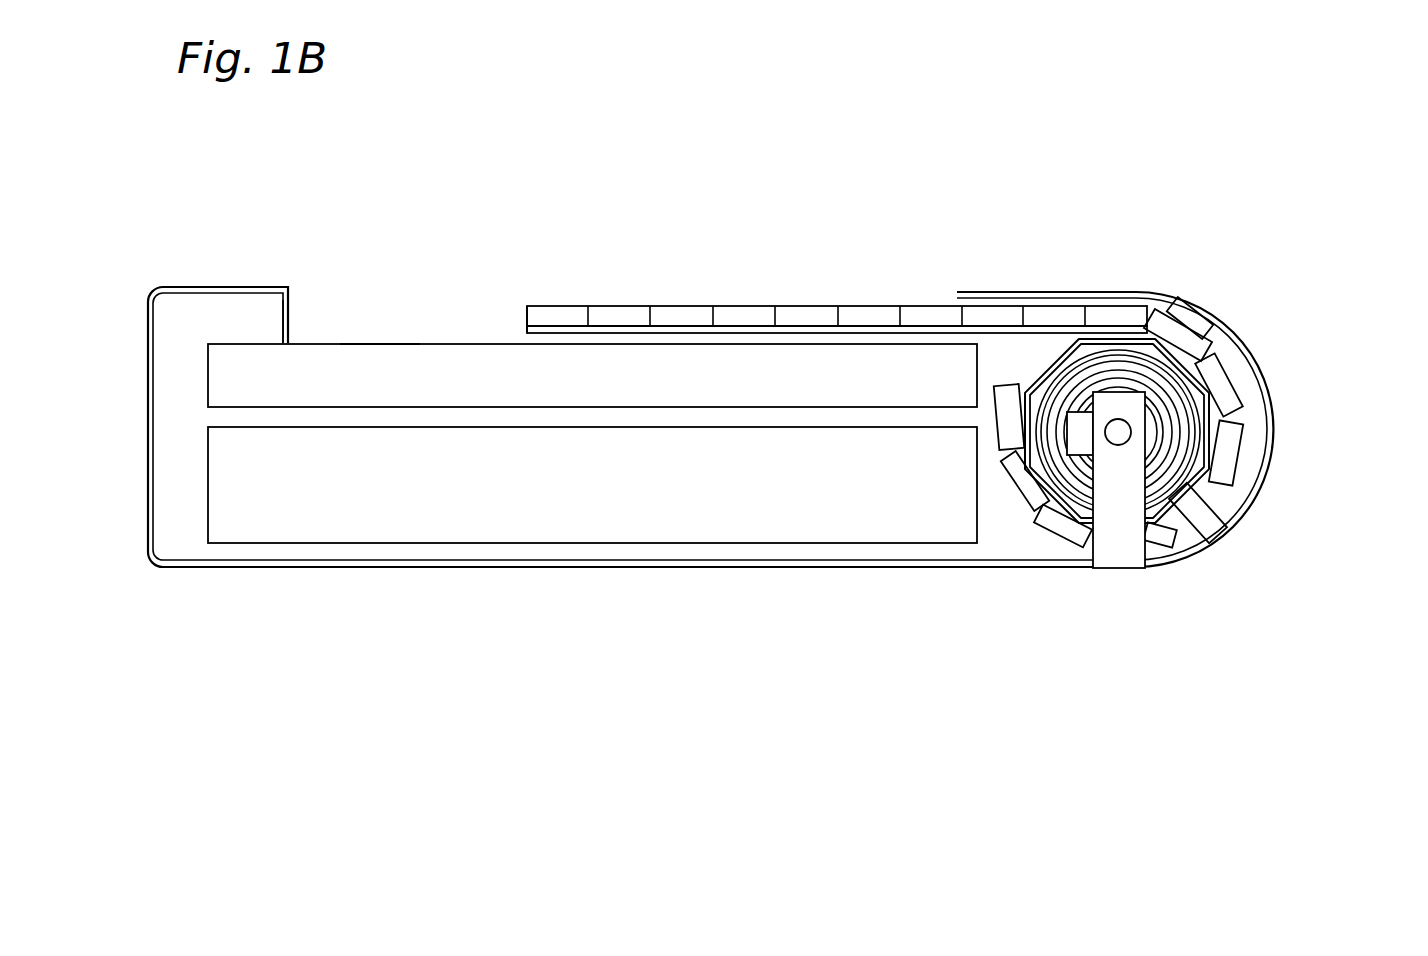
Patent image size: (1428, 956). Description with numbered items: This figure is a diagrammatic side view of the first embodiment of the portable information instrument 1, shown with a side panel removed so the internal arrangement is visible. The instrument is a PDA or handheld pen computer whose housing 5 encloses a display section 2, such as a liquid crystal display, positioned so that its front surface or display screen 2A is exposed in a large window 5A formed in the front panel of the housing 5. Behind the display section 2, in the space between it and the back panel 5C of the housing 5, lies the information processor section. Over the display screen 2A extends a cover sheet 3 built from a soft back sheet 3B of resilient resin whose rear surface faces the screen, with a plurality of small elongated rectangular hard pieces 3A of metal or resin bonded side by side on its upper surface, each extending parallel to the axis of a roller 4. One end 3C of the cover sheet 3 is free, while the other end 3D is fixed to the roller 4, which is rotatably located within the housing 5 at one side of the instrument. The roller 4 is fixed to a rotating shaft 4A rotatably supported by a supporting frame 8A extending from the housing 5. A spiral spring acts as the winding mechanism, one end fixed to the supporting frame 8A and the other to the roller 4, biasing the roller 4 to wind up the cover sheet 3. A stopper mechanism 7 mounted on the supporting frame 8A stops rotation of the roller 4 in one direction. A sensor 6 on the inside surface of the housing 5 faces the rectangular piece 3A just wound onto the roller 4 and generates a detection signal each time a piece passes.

The portable information instrument 1 is at (222, 266).
The display section 2 is at (313, 362).
The front surface (display screen) 2A is at (378, 342).
The cover sheet 3 is at (863, 299).
The small elongated rectangular hard pieces 3A is at (620, 315).
The soft back sheet 3B is at (743, 328).
The one end of the cover sheet 3C is at (527, 324).
The other end of the cover sheet 3D is at (1040, 353).
The roller 4 is at (1225, 470).
The rotating shaft 4A is at (1123, 430).
The housing 5 is at (235, 570).
The window 5A is at (290, 313).
The back panel 5C is at (808, 570).
The sensor 6 is at (1192, 315).
The stopper mechanism 7 is at (1077, 447).
The supporting frame 8A is at (1115, 508).